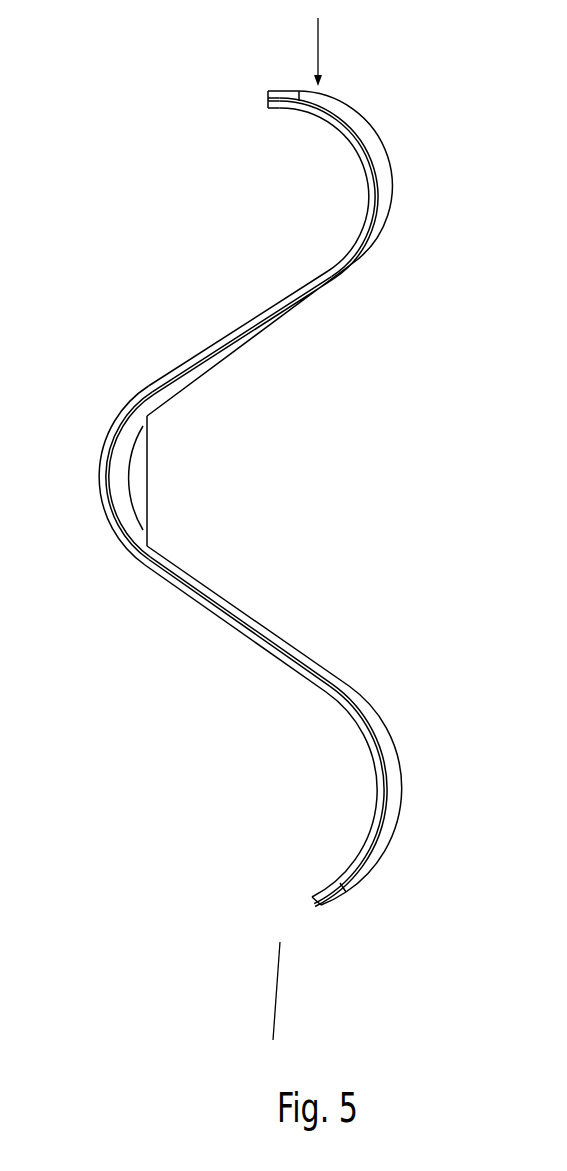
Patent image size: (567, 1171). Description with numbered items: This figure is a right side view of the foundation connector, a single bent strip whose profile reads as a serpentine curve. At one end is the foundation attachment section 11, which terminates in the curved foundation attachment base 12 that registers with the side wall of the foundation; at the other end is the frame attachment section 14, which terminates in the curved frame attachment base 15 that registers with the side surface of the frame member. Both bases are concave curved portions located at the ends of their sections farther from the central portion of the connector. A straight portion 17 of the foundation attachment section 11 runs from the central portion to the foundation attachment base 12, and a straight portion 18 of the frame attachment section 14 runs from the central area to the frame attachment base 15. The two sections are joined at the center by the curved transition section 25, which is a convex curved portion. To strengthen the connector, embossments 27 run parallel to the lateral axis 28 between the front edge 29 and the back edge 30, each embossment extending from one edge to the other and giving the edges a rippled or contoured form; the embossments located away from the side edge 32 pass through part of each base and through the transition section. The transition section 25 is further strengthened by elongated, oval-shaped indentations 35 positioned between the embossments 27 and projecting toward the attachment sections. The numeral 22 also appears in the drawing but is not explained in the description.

The foundation attachment section 11 is at (326, 659).
The foundation attachment base 12 is at (402, 796).
The frame attachment section 14 is at (305, 312).
The frame attachment base 15 is at (384, 164).
The straight portion 17 is at (274, 633).
The straight portion 18 is at (238, 352).
The lower edge 22 is at (316, 686).
The curved transition section 25 is at (103, 449).
The embossments 27 is at (313, 896).
The lateral axis 28 is at (318, 45).
The front edge 29 is at (267, 92).
The back edge 30 is at (322, 908).
The side edge 32 is at (203, 585).
The indentations 35 is at (149, 474).